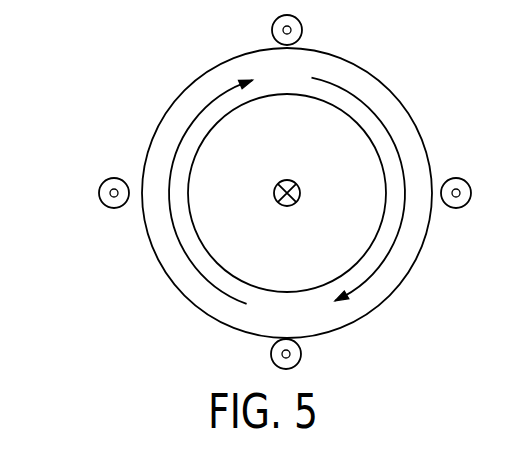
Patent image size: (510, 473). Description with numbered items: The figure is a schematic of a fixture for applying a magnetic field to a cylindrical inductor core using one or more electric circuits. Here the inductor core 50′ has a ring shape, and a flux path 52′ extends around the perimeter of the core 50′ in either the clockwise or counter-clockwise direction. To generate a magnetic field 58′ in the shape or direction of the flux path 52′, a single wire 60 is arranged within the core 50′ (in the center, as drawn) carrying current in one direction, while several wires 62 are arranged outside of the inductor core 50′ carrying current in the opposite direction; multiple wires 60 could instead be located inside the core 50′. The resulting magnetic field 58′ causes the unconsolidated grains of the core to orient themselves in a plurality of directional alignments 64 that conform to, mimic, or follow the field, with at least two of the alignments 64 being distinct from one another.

The inductor core 50′ is at (192, 80).
The flux path 52′ is at (353, 95).
The magnetic field 58′ is at (393, 135).
The wire 60 is at (273, 188).
The wire 62 is at (100, 190).
The directional alignment 64 is at (178, 142).